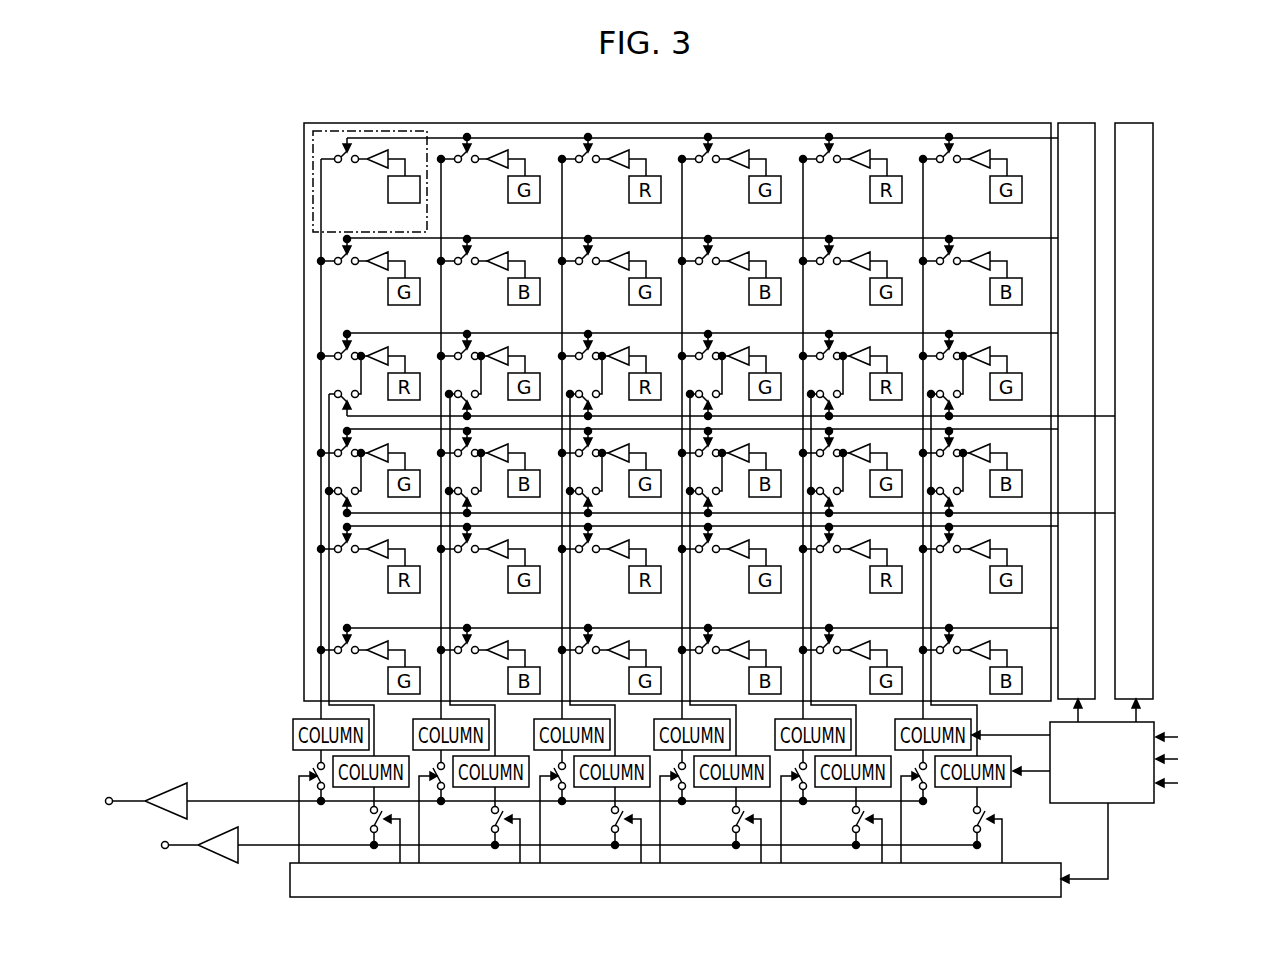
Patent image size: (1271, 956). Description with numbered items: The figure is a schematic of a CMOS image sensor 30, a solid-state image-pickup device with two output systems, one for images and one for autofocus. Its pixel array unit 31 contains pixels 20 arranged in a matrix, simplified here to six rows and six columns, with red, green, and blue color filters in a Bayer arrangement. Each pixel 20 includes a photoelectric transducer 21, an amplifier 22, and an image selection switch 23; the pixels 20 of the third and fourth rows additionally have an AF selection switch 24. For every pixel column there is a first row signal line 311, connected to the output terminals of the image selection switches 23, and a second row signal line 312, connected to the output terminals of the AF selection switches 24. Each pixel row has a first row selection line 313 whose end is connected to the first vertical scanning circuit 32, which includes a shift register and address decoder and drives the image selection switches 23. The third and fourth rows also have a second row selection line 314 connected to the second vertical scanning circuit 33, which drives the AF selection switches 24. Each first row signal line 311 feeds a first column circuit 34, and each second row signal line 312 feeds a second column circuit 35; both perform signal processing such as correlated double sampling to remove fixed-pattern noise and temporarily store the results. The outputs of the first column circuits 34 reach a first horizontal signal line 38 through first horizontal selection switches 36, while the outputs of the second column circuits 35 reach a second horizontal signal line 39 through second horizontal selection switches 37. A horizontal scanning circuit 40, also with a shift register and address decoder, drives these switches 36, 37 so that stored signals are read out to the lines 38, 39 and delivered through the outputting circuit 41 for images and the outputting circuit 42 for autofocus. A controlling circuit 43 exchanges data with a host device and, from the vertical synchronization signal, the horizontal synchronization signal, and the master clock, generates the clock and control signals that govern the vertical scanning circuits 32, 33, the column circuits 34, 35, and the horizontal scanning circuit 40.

The pixel 20 is at (393, 158).
The photoelectric transducer 21 is at (421, 190).
The amplifier 22 is at (377, 152).
The image selection switch 23 is at (341, 166).
The AF selection switch 24 is at (345, 391).
The CMOS image sensor 30 is at (128, 144).
The pixel array unit 31 is at (697, 123).
The first vertical scanning circuit 32 is at (1078, 127).
The second vertical scanning circuit 33 is at (1132, 127).
The first column circuit 34 is at (291, 735).
The second column circuit 35 is at (393, 755).
The first horizontal selection switch 36 is at (311, 770).
The second horizontal selection switch 37 is at (368, 823).
The first horizontal signal line 38 is at (209, 800).
The second horizontal signal line 39 is at (265, 845).
The horizontal scanning circuit 40 is at (1040, 866).
The outputting circuit for images 41 is at (160, 812).
The outputting circuit for autofocus 42 is at (217, 858).
The controlling circuit 43 is at (1155, 720).
The first row signal line 311 is at (318, 301).
The second row signal line 312 is at (320, 470).
The first row selection line 313 is at (400, 333).
The second row selection line 314 is at (423, 416).